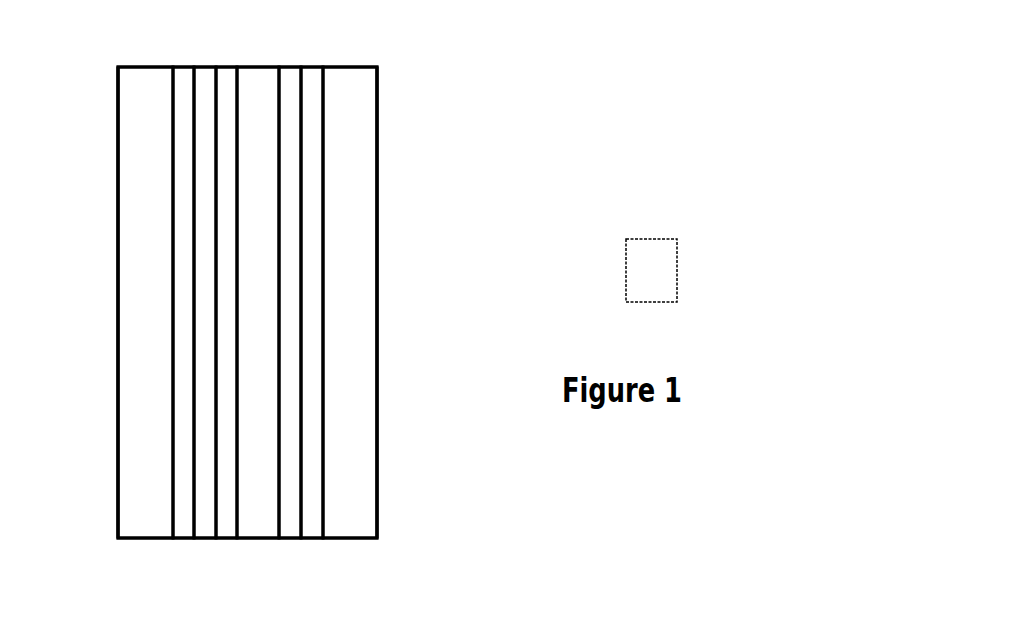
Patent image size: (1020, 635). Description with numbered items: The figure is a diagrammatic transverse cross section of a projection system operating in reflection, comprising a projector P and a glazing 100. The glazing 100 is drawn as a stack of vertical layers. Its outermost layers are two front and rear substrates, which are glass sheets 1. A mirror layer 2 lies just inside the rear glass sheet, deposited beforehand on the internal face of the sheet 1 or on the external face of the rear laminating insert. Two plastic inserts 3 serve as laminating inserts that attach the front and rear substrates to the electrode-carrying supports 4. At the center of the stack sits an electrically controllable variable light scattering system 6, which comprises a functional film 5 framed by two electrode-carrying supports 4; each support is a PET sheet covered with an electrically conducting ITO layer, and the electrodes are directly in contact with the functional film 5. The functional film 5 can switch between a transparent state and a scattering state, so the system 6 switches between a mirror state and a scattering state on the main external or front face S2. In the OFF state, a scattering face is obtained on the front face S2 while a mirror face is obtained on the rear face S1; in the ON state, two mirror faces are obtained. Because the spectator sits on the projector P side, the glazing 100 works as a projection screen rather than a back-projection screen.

The glass sheets 1 is at (148, 543).
The mirror layer 2 is at (182, 543).
The plastic inserts 3 is at (204, 543).
The electrode-carrying supports 4 is at (229, 543).
The functional film 5 is at (262, 543).
The variable light scattering system 6 is at (300, 66).
The glazing 100 is at (109, 157).
The rear face S1 is at (116, 285).
The front face S2 is at (383, 302).
The projector P is at (651, 270).